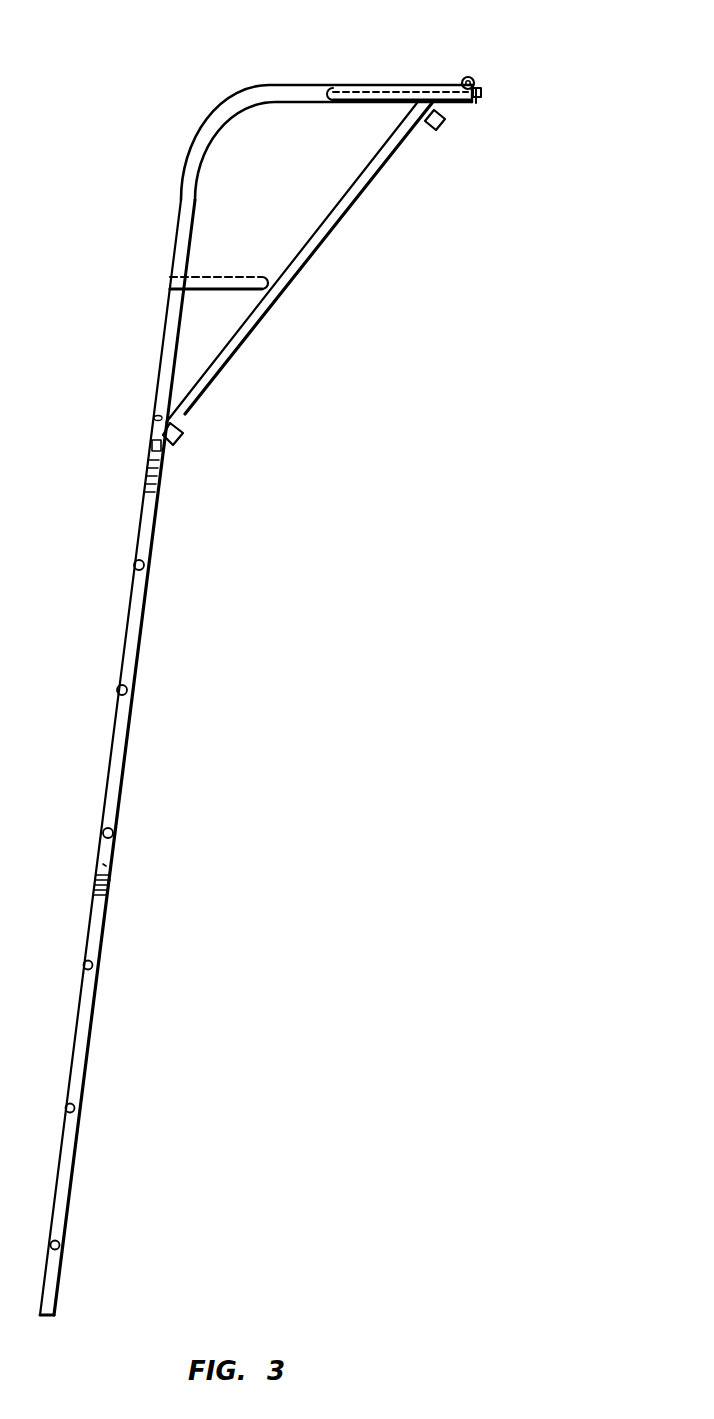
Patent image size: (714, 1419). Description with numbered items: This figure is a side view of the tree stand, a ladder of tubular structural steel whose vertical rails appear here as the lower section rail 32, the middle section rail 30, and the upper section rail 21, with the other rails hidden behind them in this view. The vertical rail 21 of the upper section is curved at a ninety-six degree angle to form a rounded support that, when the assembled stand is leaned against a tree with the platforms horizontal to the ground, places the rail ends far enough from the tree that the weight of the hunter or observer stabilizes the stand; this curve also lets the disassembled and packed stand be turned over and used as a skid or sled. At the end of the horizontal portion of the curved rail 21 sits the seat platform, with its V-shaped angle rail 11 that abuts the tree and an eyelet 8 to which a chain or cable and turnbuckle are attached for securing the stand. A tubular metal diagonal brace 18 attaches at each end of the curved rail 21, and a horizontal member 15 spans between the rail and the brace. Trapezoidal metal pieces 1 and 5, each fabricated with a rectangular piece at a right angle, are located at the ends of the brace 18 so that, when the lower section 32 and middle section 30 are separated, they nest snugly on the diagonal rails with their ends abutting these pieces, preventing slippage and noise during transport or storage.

The trapezoidal metal piece 1 is at (182, 438).
The trapezoidal metal piece 5 is at (442, 129).
The eyelet 8 is at (475, 80).
The V-shaped angle rail 11 is at (479, 94).
The cross bar 15 is at (246, 320).
The tubular metal brace 18 is at (338, 222).
The vertical rail component of the upper section 21 is at (176, 230).
The vertical rail component of the middle section 30 is at (140, 645).
The vertical rail component of the lower section 32 is at (86, 1085).